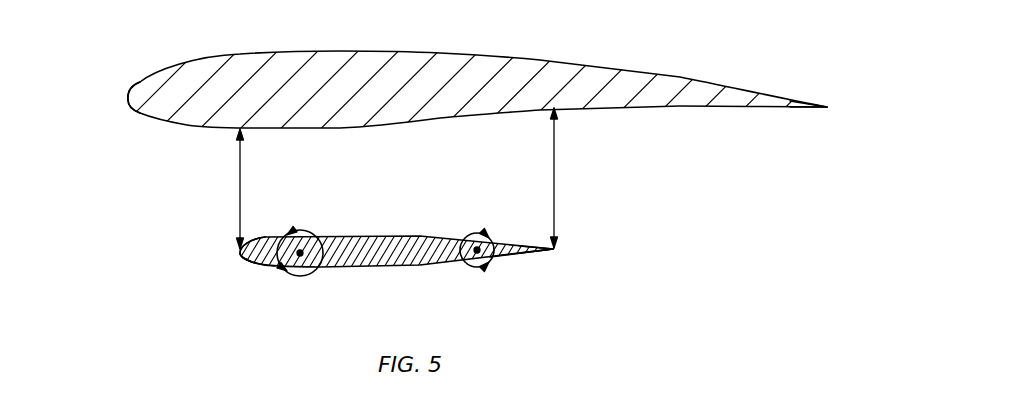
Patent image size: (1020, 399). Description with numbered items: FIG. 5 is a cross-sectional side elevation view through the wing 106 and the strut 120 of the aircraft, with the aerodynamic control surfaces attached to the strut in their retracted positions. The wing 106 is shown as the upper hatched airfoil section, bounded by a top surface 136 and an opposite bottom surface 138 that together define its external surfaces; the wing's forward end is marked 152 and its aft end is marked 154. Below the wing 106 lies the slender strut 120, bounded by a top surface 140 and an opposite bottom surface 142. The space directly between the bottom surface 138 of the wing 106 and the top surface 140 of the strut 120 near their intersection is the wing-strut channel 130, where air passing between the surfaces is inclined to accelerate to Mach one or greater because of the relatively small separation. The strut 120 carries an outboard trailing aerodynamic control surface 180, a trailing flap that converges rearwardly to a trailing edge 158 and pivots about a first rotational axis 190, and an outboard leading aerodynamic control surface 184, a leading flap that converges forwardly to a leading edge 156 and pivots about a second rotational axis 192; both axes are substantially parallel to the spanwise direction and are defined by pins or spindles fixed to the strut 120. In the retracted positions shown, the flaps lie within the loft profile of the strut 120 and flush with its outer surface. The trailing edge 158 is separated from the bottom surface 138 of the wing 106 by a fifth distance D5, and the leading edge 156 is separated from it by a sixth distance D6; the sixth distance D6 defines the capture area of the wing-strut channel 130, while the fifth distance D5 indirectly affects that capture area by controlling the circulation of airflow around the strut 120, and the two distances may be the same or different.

The wing 106 is at (475, 86).
The strut 120 is at (396, 246).
The wing-strut channel 130 is at (200, 188).
The top surface 136 is at (540, 57).
The bottom surface 138 is at (627, 107).
The top surface 140 is at (432, 236).
The bottom surface 142 is at (355, 268).
The leading edge of wing 152 is at (128, 100).
The trailing edge of wing 154 is at (828, 107).
The leading edge 156 is at (240, 255).
The trailing edge 158 is at (557, 246).
The outboard trailing aerodynamic control surface 180 is at (522, 262).
The outboard leading aerodynamic control surface 184 is at (247, 261).
The first rotational axis 190 is at (497, 233).
The second rotational axis 192 is at (298, 256).
The fifth distance D5 is at (554, 173).
The sixth distance D6 is at (240, 185).